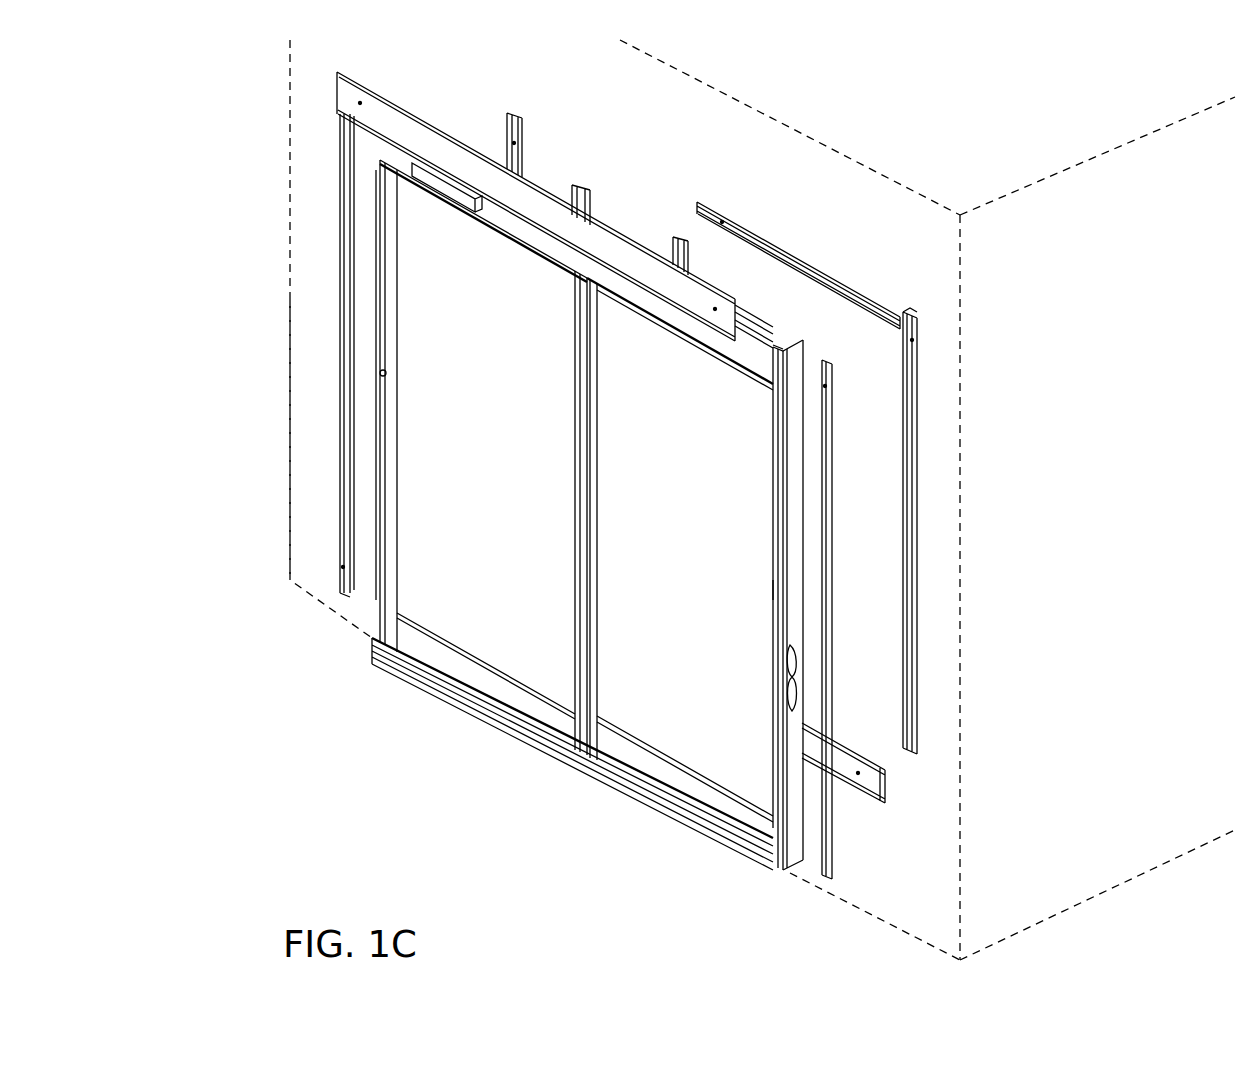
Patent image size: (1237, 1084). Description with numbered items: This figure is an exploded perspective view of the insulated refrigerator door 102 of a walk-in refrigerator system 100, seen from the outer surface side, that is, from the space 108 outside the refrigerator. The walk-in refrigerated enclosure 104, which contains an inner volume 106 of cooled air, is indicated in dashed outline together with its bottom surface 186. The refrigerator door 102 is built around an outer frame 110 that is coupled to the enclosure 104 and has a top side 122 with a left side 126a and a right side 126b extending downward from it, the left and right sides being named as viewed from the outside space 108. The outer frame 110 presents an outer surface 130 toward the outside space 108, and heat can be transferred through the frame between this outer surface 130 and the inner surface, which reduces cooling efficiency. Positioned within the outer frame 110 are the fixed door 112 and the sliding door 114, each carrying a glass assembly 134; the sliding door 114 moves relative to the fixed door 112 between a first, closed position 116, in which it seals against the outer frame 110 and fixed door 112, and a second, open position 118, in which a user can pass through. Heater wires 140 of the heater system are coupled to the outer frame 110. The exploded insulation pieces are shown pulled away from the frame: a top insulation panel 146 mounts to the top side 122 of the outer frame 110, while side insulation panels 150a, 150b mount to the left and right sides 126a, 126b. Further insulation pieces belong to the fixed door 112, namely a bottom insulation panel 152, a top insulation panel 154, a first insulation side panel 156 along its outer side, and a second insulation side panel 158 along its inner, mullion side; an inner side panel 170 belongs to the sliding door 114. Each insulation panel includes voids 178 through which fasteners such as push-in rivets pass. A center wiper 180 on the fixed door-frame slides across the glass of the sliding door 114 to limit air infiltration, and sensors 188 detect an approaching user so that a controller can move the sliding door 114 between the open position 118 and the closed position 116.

The walk-in refrigerator system 100 is at (1118, 74).
The refrigerator door 102 is at (378, 678).
The walk-in refrigerated enclosure 104 is at (657, 64).
The inner volume 106 is at (1126, 240).
The space outside the walk-in refrigerator 108 is at (198, 458).
The outer frame 110 is at (812, 338).
The fixed door 112 is at (745, 578).
The sliding door 114 is at (403, 457).
The first position 116 is at (410, 222).
The second position 118 is at (560, 324).
The top side 122 is at (740, 308).
The left side 126a is at (377, 172).
The right side 126b is at (797, 463).
The outer surface 130 is at (375, 355).
The glass assembly 134 is at (528, 648).
The heater wires 140 is at (797, 677).
The top insulation panel 146 is at (532, 185).
The side insulation panel 150a is at (340, 388).
The side insulation panel 150b is at (835, 407).
The bottom insulation panel 152 is at (877, 802).
The top insulation panel 154 is at (792, 255).
The first insulation side panel 156 is at (920, 517).
The second insulation side panel 158 is at (685, 243).
The inner side panel 170 is at (520, 117).
The voids 178 is at (915, 346).
The center wiper 180 is at (572, 180).
The bottom surface 186 is at (1126, 838).
The sensors 188 is at (435, 191).